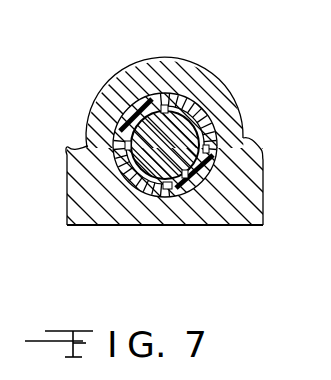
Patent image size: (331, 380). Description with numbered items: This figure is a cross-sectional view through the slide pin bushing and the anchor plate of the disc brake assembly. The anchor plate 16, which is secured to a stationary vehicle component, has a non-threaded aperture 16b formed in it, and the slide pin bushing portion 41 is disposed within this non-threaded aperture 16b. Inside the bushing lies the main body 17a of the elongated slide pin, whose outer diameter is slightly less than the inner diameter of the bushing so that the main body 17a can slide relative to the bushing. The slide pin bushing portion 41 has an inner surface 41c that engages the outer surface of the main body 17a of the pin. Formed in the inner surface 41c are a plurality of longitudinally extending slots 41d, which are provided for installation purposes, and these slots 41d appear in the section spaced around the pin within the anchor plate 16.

The anchor plate 16 is at (137, 77).
The non-threaded aperture 16b is at (203, 108).
The main body 17a is at (178, 123).
The slide pin bushing portion 41 is at (185, 180).
The inner surface 41c is at (195, 176).
The longitudinally extending slots 41d is at (118, 138).